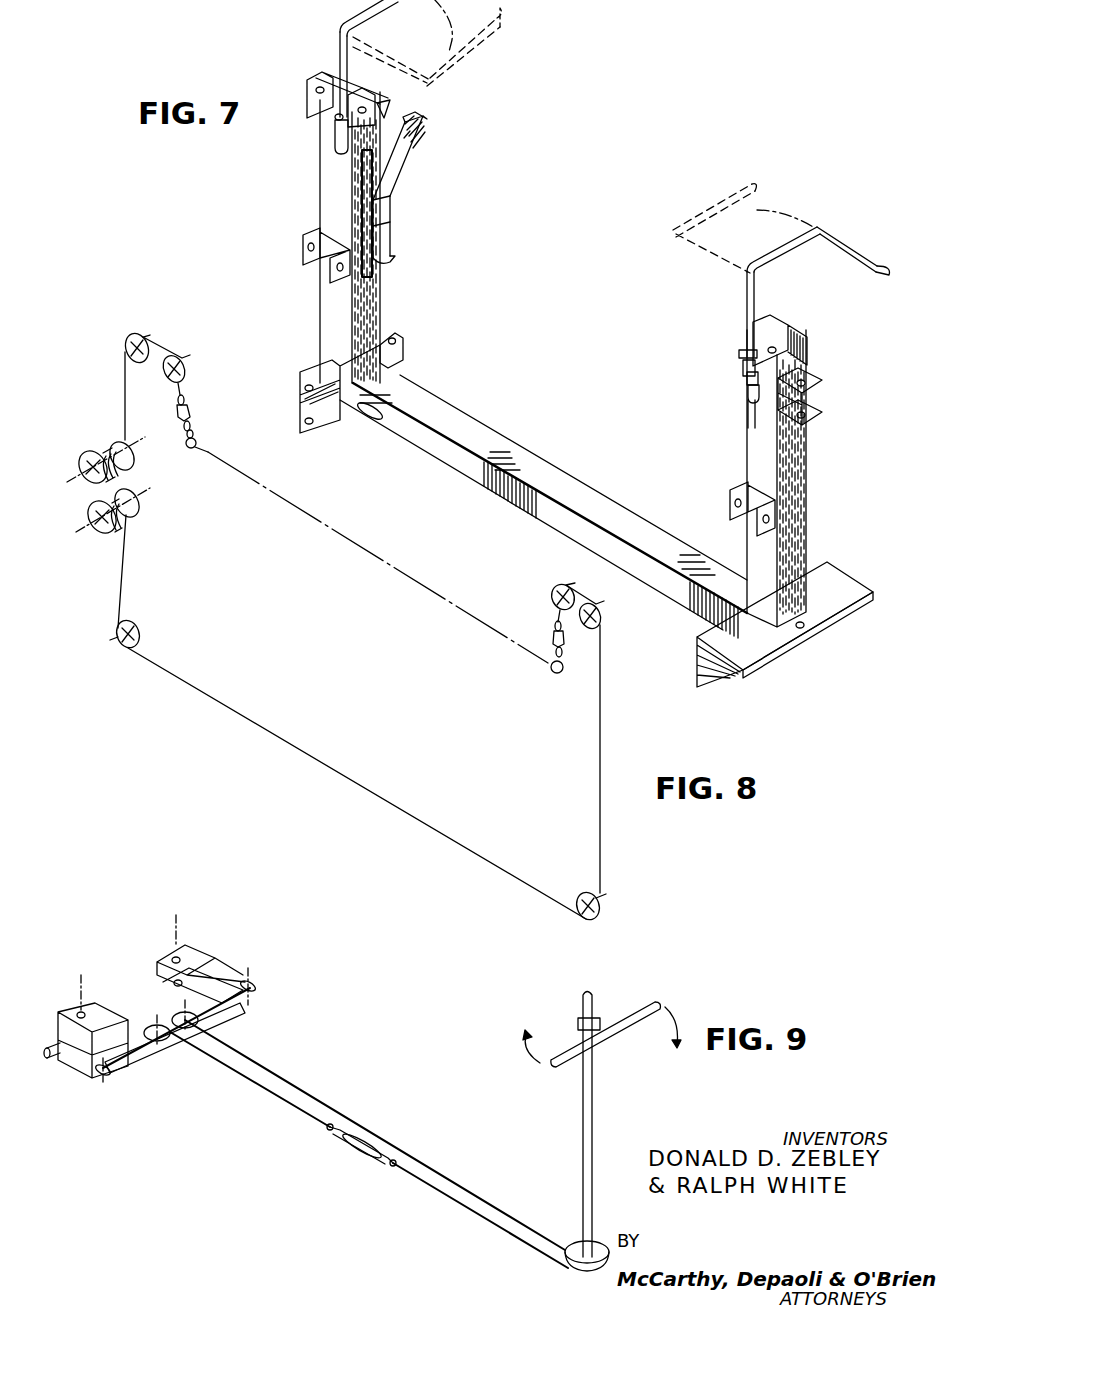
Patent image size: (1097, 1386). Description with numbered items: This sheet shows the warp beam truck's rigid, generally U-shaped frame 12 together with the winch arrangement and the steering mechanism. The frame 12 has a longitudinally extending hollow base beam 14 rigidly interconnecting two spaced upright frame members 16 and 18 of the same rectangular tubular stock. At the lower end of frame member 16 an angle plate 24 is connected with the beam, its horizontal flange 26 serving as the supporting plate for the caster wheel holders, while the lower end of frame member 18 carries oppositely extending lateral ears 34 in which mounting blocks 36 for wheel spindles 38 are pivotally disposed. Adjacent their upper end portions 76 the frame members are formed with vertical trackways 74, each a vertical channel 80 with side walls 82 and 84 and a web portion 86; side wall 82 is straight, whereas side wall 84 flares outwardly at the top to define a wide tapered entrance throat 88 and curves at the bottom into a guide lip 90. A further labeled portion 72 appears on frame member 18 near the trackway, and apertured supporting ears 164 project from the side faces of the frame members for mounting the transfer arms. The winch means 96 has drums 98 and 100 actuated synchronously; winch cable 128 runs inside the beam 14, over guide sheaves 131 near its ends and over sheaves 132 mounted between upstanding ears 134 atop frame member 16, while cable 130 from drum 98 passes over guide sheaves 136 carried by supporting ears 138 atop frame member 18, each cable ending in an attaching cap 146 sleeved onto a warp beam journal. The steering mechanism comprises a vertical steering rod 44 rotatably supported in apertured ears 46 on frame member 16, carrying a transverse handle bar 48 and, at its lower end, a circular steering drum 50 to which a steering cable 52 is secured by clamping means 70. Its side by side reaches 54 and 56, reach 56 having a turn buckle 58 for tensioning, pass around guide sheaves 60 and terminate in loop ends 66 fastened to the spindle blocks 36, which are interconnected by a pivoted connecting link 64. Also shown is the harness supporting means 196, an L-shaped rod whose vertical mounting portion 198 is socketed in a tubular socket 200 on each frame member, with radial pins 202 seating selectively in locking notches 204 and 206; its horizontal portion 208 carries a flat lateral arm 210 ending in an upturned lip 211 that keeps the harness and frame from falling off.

In FIG. 7, the frame 12 is at (483, 440).
In FIG. 7, the base beam 14 is at (562, 478).
In FIG. 8, the upright frame member 16 is at (797, 490).
In FIG. 7, the upright frame member 18 is at (370, 293).
In FIG. 8, the angle plate 24 is at (697, 640).
In FIG. 8, the horizontal flange 26 is at (765, 656).
In FIG. 7, the lateral ears 34 is at (300, 387).
In FIG. 9, the mounting block 36 is at (162, 952).
In FIG. 9, the wheel spindle 38 is at (207, 953).
In FIG. 9, the steering rod 44 is at (583, 1105).
In FIG. 8, the apertured ears 46 is at (820, 380).
In FIG. 9, the handle bar 48 is at (560, 1040).
In FIG. 9, the steering drum 50 is at (567, 1240).
In FIG. 9, the steering cable 52 is at (398, 1140).
In FIG. 9, the cable reach 54 is at (280, 1080).
In FIG. 9, the cable reach 56 is at (248, 1080).
In FIG. 9, the turn buckle 58 is at (345, 1150).
In FIG. 9, the guide sheaves 60 is at (180, 1012).
In FIG. 9, the connecting link 64 is at (160, 1065).
In FIG. 9, the loop ends 66 is at (255, 988).
In FIG. 9, the clamping means 70 is at (585, 1280).
In FIG. 7, the post face 72 is at (334, 199).
In FIG. 7, the vertical trackway 74 is at (404, 185).
In FIG. 7, the upper end portion 76 is at (320, 112).
In FIG. 7, the vertical channel 80 is at (392, 208).
In FIG. 7, the side wall 82 is at (390, 229).
In FIG. 7, the side wall 84 is at (397, 200).
In FIG. 7, the web portion 86 is at (380, 137).
In FIG. 7, the entrance throat 88 is at (415, 142).
In FIG. 7, the guide lip 90 is at (393, 260).
In FIG. 7, the winch means 96 is at (278, 718).
In FIG. 7, the winch drum 98 is at (138, 460).
In FIG. 7, the winch drum 100 is at (97, 538).
In FIG. 7, the winch cable 128 is at (198, 687).
In FIG. 7, the winch cable 130 is at (125, 387).
In FIG. 7, the guide sheaves 131 is at (137, 622).
In FIG. 7, the sheaves 132 is at (602, 614).
In FIG. 8, the upstanding ears 134 is at (775, 330).
In FIG. 7, the guide sheaves 136 is at (143, 335).
In FIG. 7, the supporting ears 138 is at (330, 70).
In FIG. 7, the attaching cap 146 is at (198, 445).
In FIG. 8, the supporting ears 164 is at (773, 520).
In FIG. 7, the supporting means 196 is at (343, 12).
In FIG. 8, the supporting means 196 is at (783, 263).
In FIG. 7, the vertical mounting portion 198 is at (340, 52).
In FIG. 8, the vertical mounting portion 198 is at (745, 290).
In FIG. 7, the tubular socket 200 is at (336, 142).
In FIG. 8, the tubular socket 200 is at (752, 400).
In FIG. 7, the pins 202 is at (336, 122).
In FIG. 8, the pins 202 is at (740, 355).
In FIG. 8, the locking notches 204 is at (750, 382).
In FIG. 8, the locking notches 206 is at (745, 370).
In FIG. 7, the horizontal portion 208 is at (421, 26).
In FIG. 8, the horizontal portion 208 is at (797, 237).
In FIG. 7, the horizontal arm 210 is at (477, 56).
In FIG. 8, the horizontal arm 210 is at (845, 250).
In FIG. 7, the upturned lip 211 is at (500, 8).
In FIG. 8, the upturned lip 211 is at (878, 280).